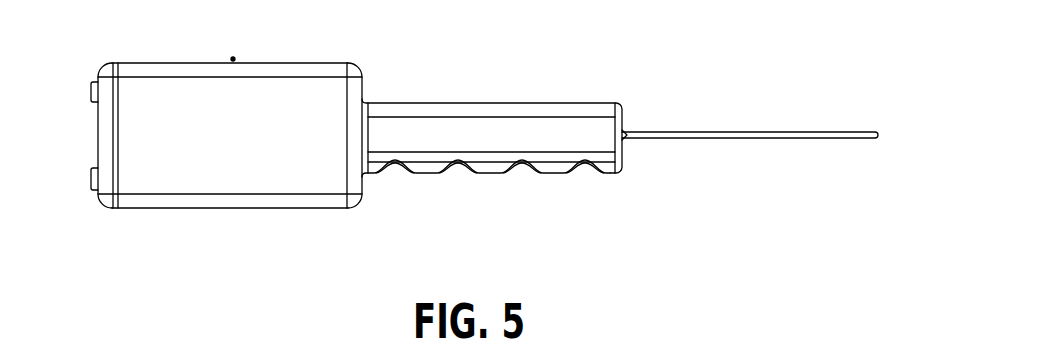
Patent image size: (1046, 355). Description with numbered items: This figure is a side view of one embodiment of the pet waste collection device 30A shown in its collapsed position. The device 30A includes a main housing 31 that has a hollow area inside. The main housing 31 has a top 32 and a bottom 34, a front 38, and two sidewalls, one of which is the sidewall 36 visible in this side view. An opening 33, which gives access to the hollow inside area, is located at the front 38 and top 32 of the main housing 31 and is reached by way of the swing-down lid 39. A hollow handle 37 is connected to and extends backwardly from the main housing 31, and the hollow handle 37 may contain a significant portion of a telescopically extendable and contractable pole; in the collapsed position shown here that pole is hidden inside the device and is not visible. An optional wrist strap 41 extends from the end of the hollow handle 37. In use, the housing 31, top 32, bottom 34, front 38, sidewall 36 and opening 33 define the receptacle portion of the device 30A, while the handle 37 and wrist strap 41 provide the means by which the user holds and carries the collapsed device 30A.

The pet waste collection device 30A is at (653, 106).
The main housing 31 is at (314, 177).
The top 32 is at (310, 63).
The opening 33 is at (120, 122).
The bottom 34 is at (243, 208).
The sidewall 36 is at (173, 162).
The hollow handle 37 is at (495, 105).
The front 38 is at (105, 152).
The swing-down lid 39 is at (177, 62).
The wrist strap 41 is at (813, 132).